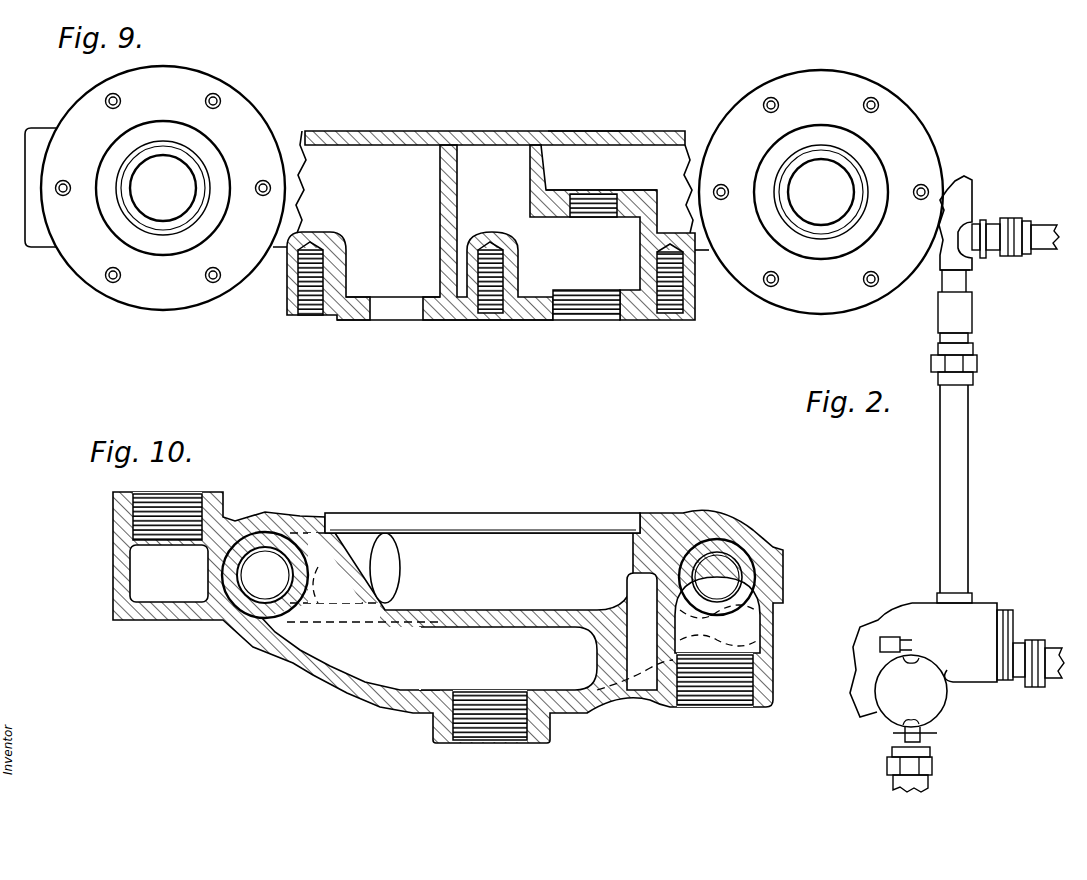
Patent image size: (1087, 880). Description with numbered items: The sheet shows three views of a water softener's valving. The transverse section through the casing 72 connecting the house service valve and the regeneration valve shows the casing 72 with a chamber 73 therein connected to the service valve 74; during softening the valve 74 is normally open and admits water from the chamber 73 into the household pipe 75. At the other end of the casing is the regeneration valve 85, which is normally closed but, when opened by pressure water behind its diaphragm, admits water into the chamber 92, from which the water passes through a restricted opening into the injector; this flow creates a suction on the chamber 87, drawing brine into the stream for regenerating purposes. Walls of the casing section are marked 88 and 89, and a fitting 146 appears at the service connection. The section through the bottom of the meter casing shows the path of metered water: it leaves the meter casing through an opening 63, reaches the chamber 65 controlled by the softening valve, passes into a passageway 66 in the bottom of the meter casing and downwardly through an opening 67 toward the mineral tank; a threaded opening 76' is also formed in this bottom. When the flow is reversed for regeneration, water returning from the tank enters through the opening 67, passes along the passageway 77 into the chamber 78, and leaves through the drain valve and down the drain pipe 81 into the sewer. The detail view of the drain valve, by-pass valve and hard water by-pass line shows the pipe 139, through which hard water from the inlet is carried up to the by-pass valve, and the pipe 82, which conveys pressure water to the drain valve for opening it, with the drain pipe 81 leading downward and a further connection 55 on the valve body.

In FIG. 9, the service valve 74 is at (82, 97).
In FIG. 9, the casing 72 is at (442, 132).
In FIG. 9, the chamber 73 is at (396, 162).
In FIG. 9, the chamber 87 is at (566, 232).
In FIG. 9, the wall 88 is at (582, 131).
In FIG. 9, the threaded port 89 is at (640, 215).
In FIG. 9, the chamber 92 is at (617, 158).
In FIG. 9, the regeneration valve 85 is at (840, 80).
In FIG. 2, the elbow fitting 146 is at (975, 262).
In FIG. 2, the household pipe 75 is at (1043, 223).
In FIG. 2, the pipe 139 is at (960, 488).
In FIG. 2, the pipe 82 is at (912, 652).
In FIG. 2, the pipe fitting 55 is at (1043, 687).
In FIG. 2, the drain pipe 81 is at (932, 770).
In FIG. 10, the drain pipe 81 is at (730, 680).
In FIG. 10, the passageway 66 is at (448, 617).
In FIG. 10, the threaded opening 76' is at (190, 499).
In FIG. 10, the opening 63 is at (470, 571).
In FIG. 10, the chamber 65 is at (253, 610).
In FIG. 10, the passageway 77 is at (572, 668).
In FIG. 10, the opening 67 is at (487, 728).
In FIG. 10, the chamber 78 is at (740, 560).